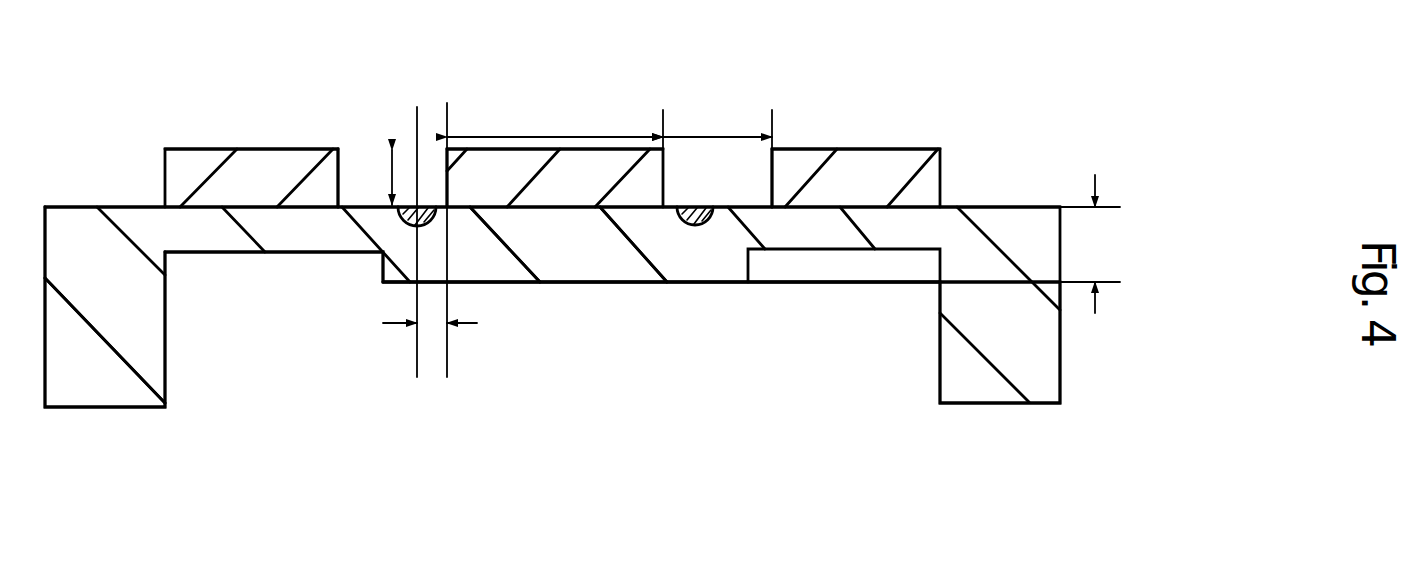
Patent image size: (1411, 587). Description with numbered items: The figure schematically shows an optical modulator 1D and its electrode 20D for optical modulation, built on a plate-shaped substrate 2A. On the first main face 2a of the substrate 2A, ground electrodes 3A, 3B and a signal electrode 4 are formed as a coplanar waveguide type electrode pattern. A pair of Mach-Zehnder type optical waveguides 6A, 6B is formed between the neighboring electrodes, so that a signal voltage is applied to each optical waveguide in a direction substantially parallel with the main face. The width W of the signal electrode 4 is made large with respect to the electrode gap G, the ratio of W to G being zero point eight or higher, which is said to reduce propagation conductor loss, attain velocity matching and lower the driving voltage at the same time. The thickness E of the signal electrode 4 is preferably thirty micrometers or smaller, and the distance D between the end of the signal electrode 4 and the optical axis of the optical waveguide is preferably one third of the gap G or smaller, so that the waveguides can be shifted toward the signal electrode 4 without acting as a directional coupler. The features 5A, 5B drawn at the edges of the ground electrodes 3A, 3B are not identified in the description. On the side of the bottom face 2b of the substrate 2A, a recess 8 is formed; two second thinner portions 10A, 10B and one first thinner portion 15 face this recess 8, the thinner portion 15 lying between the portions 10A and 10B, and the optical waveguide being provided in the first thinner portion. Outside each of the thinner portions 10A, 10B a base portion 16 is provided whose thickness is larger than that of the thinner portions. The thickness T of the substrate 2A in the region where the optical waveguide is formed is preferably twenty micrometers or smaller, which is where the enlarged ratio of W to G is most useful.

The optical modulator 1D is at (1015, 117).
The substrate 2A is at (1050, 197).
The first main face 2a is at (863, 205).
The bottom face 2b is at (737, 282).
The ground electrode 3A is at (182, 165).
The ground electrode 3B is at (930, 157).
The signal electrode 4 is at (605, 160).
The end face of first component 5A is at (336, 145).
The end face of second component 5B is at (783, 130).
The optical waveguide 6A is at (407, 225).
The optical waveguide 6B is at (695, 226).
The recess 8 is at (627, 362).
The second thinner portion 10A is at (263, 240).
The second thinner portion 10B is at (857, 232).
The first thinner portion 15 is at (557, 257).
The base portion 16 is at (130, 390).
The electrode for optical modulation 20D is at (452, 112).
The width of the signal electrode W is at (532, 128).
The electrode gap G is at (720, 128).
The thickness of the signal electrode E is at (391, 175).
The distance between the end of the signal electrode and the optical axis of the opt D is at (433, 330).
The thickness of the substrate T is at (1097, 240).